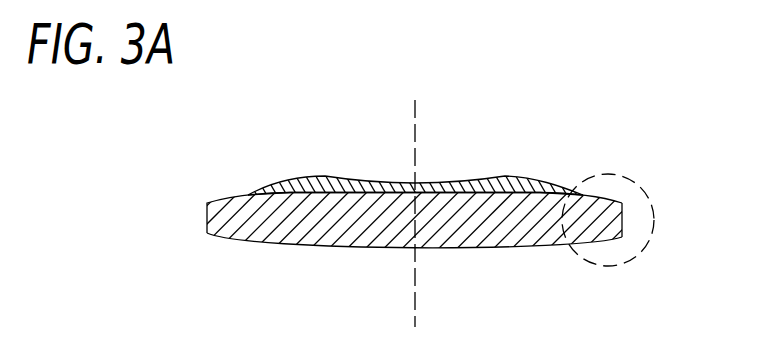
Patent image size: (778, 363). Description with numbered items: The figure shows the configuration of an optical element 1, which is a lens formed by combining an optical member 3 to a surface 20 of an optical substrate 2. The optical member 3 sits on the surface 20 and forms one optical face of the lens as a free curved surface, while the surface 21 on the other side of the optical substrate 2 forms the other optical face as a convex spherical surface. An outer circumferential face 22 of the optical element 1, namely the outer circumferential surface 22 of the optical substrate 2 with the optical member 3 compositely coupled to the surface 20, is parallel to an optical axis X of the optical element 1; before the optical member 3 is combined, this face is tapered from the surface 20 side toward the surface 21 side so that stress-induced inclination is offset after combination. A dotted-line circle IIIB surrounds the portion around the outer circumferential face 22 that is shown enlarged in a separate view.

The optical element 1 is at (88, 150).
The optical substrate 2 is at (222, 222).
The optical member 3 is at (265, 178).
The surface 20 is at (505, 181).
The surface 21 is at (497, 248).
The outer circumferential face 22 is at (622, 218).
The optical axis X is at (413, 120).
The dotted-line circle IIIB is at (625, 177).